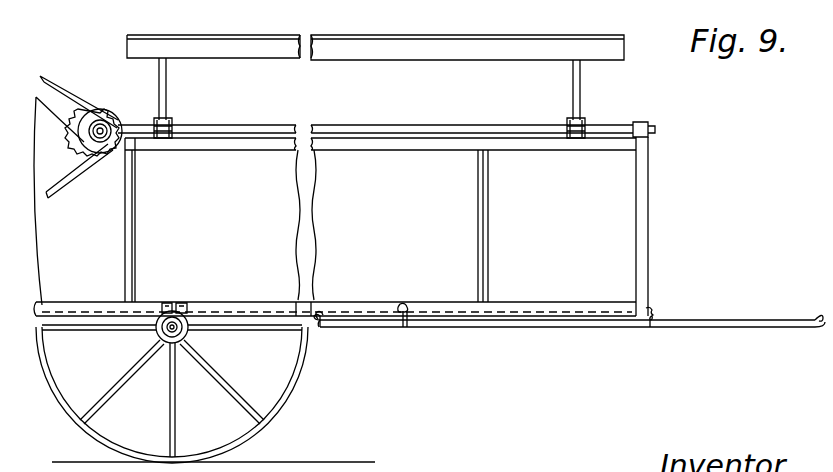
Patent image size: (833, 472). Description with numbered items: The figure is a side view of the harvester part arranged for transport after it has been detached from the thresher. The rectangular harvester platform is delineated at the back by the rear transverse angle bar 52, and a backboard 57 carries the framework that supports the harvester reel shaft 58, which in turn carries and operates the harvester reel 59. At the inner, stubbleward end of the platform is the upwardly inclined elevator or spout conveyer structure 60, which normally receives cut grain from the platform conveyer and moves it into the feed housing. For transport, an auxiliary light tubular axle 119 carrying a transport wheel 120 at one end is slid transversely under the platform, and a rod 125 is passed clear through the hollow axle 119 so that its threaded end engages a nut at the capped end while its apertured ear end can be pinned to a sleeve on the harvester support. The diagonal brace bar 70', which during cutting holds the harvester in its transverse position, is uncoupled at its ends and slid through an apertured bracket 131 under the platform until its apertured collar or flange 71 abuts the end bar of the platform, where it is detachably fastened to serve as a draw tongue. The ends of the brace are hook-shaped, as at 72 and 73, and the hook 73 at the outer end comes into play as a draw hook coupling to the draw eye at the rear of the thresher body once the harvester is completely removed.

The rear transverse angle bar 52 is at (576, 320).
The backboard 57 is at (648, 216).
The harvester reel shaft 58 is at (492, 125).
The harvester reel 59 is at (626, 40).
The elevator or spout conveyer structure 60 is at (60, 110).
The diagonal brace bar 70' is at (564, 335).
The apertured collar 71 is at (652, 316).
The hook-shaped end 72 is at (320, 326).
The hook 73 is at (816, 327).
The tubular axle 119 is at (158, 332).
The transport wheel 120 is at (296, 386).
The rod 125 is at (188, 330).
The apertured bracket 131 is at (405, 326).